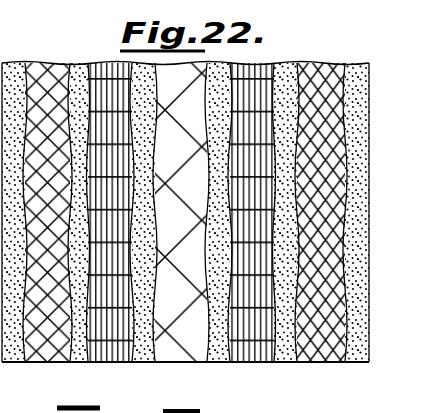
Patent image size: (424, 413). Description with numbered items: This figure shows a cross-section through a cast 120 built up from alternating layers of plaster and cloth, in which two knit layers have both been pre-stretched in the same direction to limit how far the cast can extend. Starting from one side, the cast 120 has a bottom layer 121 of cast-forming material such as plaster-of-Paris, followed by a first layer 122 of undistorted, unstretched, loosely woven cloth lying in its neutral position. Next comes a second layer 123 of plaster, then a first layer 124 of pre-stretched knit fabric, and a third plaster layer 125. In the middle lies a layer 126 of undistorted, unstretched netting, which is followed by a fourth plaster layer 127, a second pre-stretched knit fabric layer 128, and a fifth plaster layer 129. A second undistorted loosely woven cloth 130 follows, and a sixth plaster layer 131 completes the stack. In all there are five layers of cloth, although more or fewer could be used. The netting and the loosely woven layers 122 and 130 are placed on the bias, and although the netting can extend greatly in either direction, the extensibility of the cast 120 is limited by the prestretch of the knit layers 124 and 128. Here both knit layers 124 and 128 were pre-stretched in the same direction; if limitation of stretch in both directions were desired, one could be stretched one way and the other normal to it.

The cast 120 is at (186, 218).
The bottom layer of cast-forming material 121 is at (354, 362).
The first layer of undistorted, unstretched, loosely woven cloth 122 is at (320, 362).
The second layer of plaster 123 is at (289, 362).
The first layer of pre-stretched knit fabric 124 is at (254, 362).
The third plaster layer 125 is at (216, 362).
The layer of undistorted, unstretched netting 126 is at (182, 362).
The fourth plaster layer 127 is at (140, 362).
The second pre-stretched knit fabric layer 128 is at (103, 362).
The fifth plaster layer 129 is at (78, 362).
The second undistorted loosely woven cloth 130 is at (45, 362).
The sixth plaster layer 131 is at (17, 362).